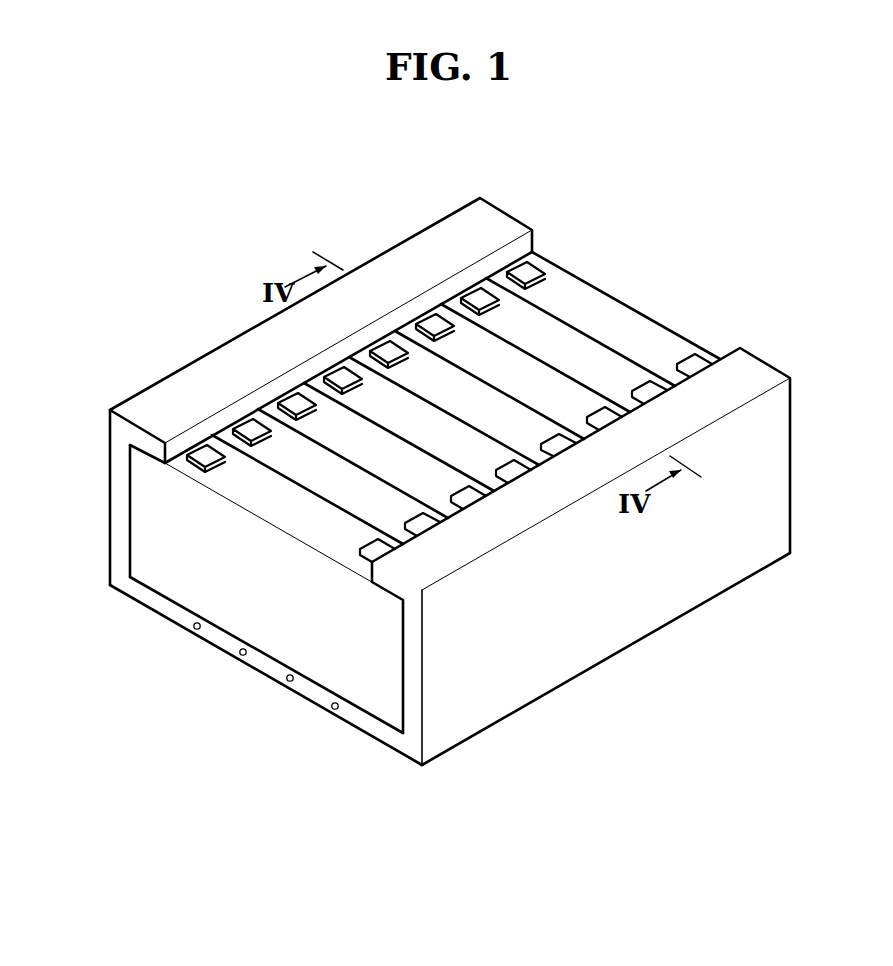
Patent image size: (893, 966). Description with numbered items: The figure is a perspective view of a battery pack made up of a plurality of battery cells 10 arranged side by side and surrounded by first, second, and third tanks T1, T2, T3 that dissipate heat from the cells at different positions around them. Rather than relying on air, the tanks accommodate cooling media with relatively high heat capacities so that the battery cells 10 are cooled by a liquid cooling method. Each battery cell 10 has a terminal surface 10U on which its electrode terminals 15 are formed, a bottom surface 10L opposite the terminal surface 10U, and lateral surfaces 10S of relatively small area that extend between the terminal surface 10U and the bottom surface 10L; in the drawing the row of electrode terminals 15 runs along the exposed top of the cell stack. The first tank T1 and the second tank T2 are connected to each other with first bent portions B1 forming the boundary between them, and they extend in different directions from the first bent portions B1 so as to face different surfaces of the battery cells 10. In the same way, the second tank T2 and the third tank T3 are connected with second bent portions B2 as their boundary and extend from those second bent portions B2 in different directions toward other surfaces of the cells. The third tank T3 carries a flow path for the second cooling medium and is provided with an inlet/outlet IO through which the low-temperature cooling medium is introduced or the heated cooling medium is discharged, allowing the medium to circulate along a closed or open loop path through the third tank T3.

The battery cell 10 is at (467, 373).
The terminal surface 10U is at (613, 322).
The bottom surface 10L is at (265, 658).
The lateral surface 10S is at (403, 655).
The electrode terminal 15 is at (534, 268).
The first tank T1 is at (148, 445).
The second tank T2 is at (118, 503).
The third tank T3 is at (146, 599).
The inlet/outlet IO is at (195, 632).
The first bent portion B1 is at (561, 509).
The second bent portion B2 is at (561, 687).